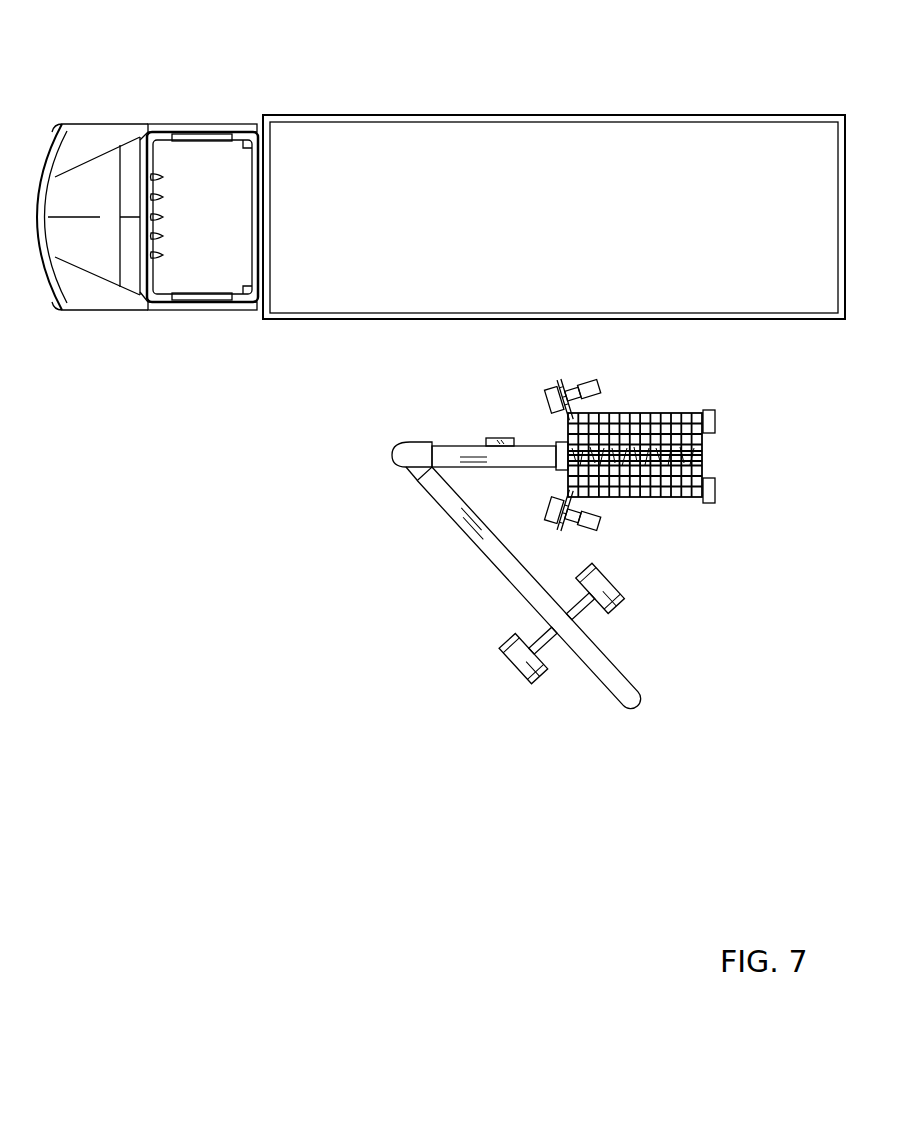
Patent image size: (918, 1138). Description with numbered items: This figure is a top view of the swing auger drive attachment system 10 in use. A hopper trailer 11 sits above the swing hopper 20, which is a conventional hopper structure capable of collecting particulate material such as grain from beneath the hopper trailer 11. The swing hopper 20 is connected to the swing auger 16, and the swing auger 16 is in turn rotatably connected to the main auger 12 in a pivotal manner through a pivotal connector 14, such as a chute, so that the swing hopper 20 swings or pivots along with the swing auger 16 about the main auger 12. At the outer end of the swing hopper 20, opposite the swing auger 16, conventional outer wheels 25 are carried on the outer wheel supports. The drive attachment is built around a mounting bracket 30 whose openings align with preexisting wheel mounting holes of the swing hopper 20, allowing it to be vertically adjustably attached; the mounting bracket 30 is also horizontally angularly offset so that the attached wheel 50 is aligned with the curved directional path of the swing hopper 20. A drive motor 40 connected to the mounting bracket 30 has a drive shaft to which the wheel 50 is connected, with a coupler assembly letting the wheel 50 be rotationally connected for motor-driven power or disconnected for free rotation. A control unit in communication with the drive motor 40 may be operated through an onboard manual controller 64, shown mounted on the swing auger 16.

The swing auger drive attachment system 10 is at (262, 571).
The hopper trailer 11 is at (400, 113).
The main auger 12 is at (488, 568).
The pivotal connector 14 is at (390, 450).
The swing auger 16 is at (452, 447).
The swing hopper 20 is at (703, 455).
The outer wheels 25 is at (716, 421).
The mounting bracket 30 is at (614, 374).
The drive motor 40 is at (598, 391).
The wheel 50 is at (546, 400).
The onboard manual controller 64 is at (500, 438).